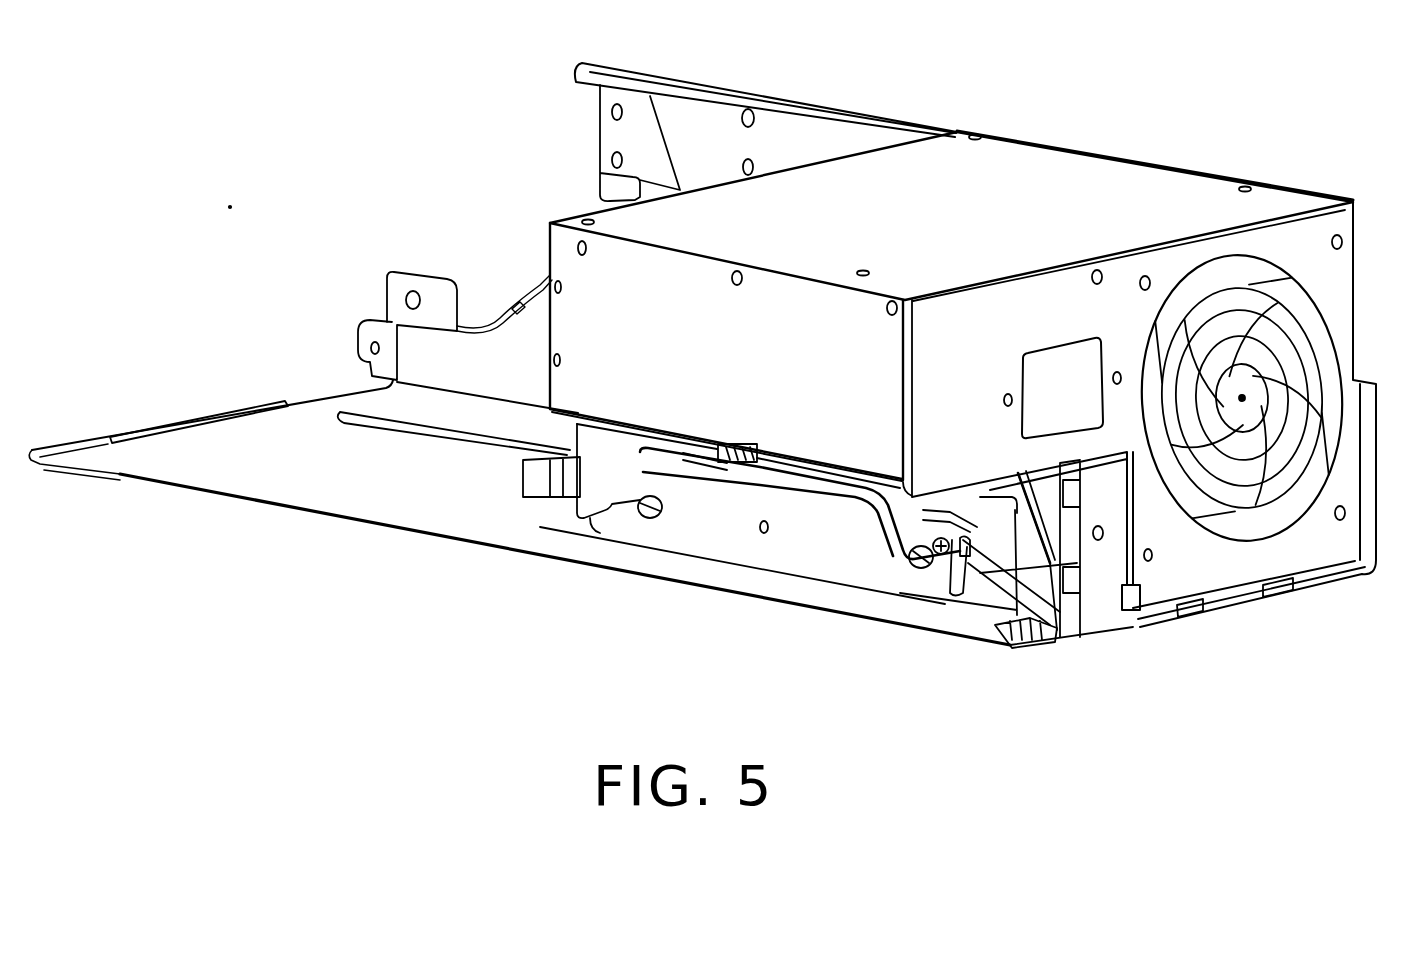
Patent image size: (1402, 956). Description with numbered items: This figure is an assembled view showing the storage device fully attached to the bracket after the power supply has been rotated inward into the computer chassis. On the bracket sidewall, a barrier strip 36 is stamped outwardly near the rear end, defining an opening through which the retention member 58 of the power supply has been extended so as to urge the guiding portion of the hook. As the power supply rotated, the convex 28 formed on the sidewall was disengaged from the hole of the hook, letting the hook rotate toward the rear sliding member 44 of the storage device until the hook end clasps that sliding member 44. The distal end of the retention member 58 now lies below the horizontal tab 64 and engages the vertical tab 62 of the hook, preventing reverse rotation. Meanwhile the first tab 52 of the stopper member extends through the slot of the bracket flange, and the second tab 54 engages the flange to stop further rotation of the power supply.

The convex 28 is at (965, 592).
The barrier strip 36 is at (1010, 507).
The sliding members 44 is at (640, 510).
The first tab 52 is at (727, 474).
The second tab 54 is at (757, 470).
The retention member 58 is at (1060, 612).
The vertical tab 62 is at (939, 556).
The horizontal tab 64 is at (1027, 644).